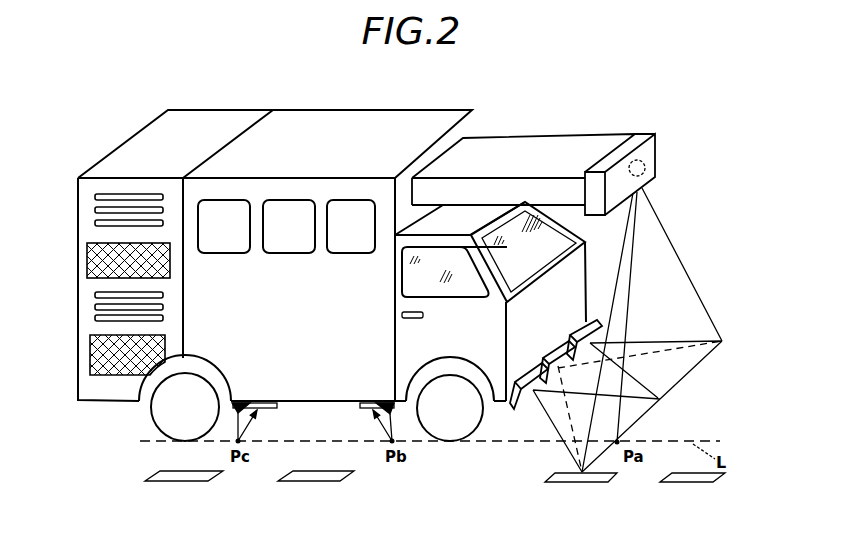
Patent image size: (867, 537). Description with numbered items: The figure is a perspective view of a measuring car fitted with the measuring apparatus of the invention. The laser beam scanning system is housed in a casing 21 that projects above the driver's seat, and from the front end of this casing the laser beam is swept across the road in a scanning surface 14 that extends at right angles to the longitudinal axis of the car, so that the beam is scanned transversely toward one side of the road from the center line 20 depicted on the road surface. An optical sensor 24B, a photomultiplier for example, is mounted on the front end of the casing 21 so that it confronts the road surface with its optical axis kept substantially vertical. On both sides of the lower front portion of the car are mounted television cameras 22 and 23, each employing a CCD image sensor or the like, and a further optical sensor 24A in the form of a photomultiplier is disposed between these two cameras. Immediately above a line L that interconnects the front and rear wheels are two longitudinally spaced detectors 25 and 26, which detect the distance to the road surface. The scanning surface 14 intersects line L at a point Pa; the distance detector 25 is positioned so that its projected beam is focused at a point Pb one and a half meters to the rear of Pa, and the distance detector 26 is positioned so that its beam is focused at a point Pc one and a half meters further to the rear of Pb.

The casing 21 is at (570, 148).
The optical sensor 24B is at (647, 171).
The scanning surface 14 is at (683, 290).
The television camera 22 is at (533, 367).
The optical sensor 24A is at (560, 346).
The television camera 23 is at (592, 322).
The center line 20 is at (557, 485).
The distance detector 25 is at (370, 404).
The distance detector 26 is at (258, 404).